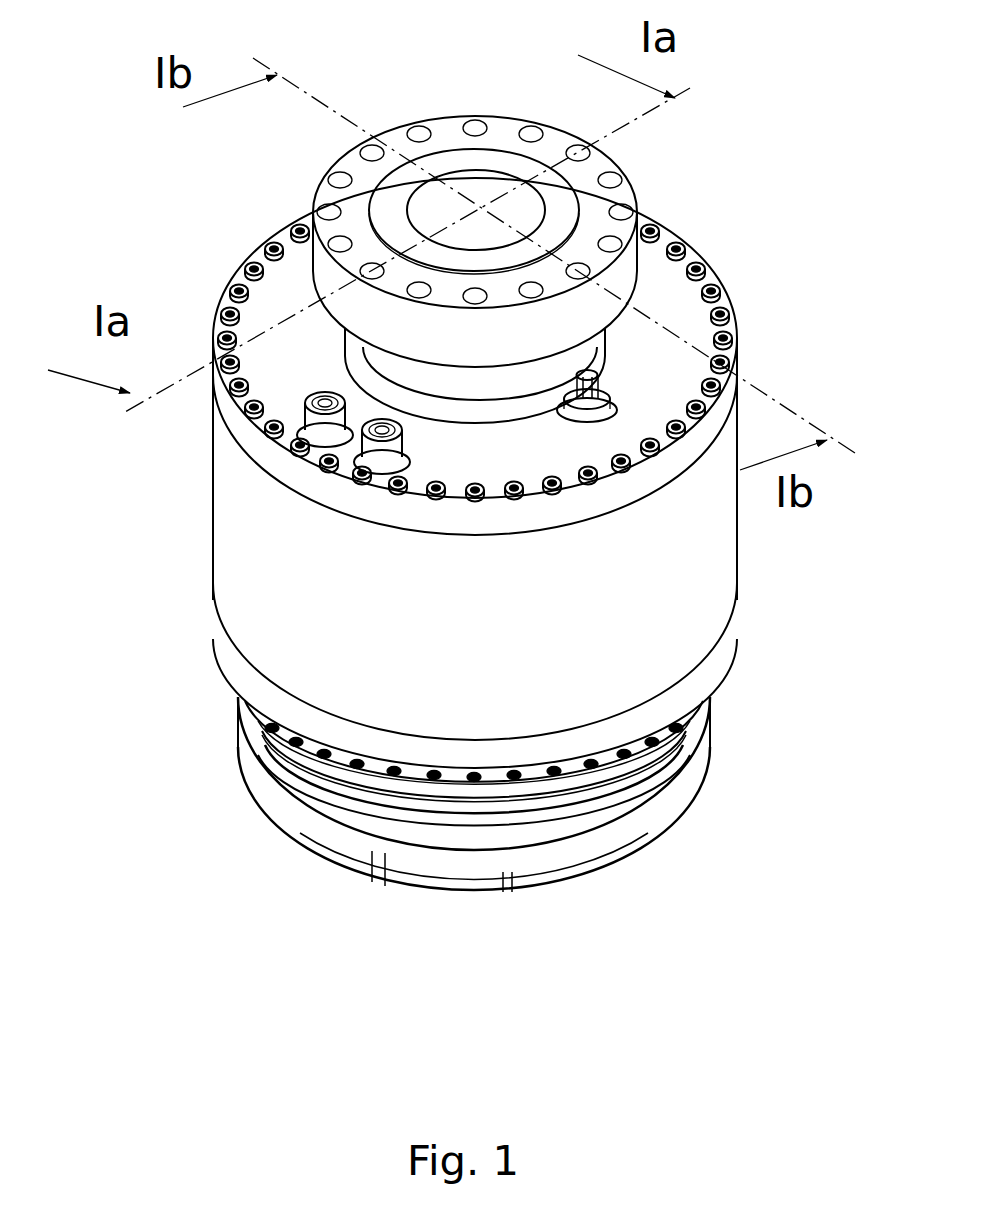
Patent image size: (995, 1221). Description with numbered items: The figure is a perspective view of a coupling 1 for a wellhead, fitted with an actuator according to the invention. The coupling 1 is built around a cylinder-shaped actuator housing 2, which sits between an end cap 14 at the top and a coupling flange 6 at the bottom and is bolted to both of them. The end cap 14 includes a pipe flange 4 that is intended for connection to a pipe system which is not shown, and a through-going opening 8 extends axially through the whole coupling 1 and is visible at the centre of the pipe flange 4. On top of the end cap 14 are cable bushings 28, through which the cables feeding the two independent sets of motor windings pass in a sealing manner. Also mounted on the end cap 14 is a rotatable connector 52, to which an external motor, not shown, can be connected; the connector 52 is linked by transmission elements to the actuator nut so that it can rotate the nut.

The coupling 1 is at (475, 473).
The actuator housing 2 is at (228, 535).
The pipe flange 4 is at (618, 162).
The coupling flange 6 is at (267, 752).
The through-going opening 8 is at (447, 197).
The end cap 14 is at (263, 312).
The cable bushing 28 is at (360, 447).
The rotatable connector 52 is at (603, 386).